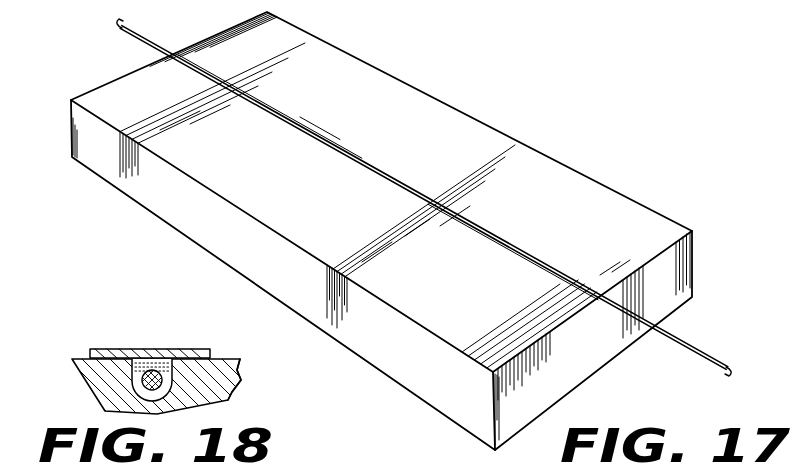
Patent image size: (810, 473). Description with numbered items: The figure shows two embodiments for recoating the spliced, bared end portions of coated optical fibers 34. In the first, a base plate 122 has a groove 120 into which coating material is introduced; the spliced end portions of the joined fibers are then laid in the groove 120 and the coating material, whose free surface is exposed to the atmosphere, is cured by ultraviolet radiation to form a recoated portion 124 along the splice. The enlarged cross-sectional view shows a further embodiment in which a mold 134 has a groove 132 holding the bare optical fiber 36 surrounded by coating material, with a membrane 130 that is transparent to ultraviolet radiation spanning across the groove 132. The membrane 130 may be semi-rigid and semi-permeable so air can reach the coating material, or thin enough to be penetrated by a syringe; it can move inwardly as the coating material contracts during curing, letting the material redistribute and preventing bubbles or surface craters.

In FIG. 17, the coated optical fiber 34 is at (136, 37).
In FIG. 18, the optical fiber 36 is at (158, 372).
In FIG. 17, the groove 120 is at (381, 231).
In FIG. 17, the base plate 122 is at (447, 105).
In FIG. 17, the recoated portion 124 is at (340, 148).
In FIG. 18, the membrane 130 is at (109, 351).
In FIG. 18, the groove 132 is at (127, 372).
In FIG. 18, the mold 134 is at (230, 389).